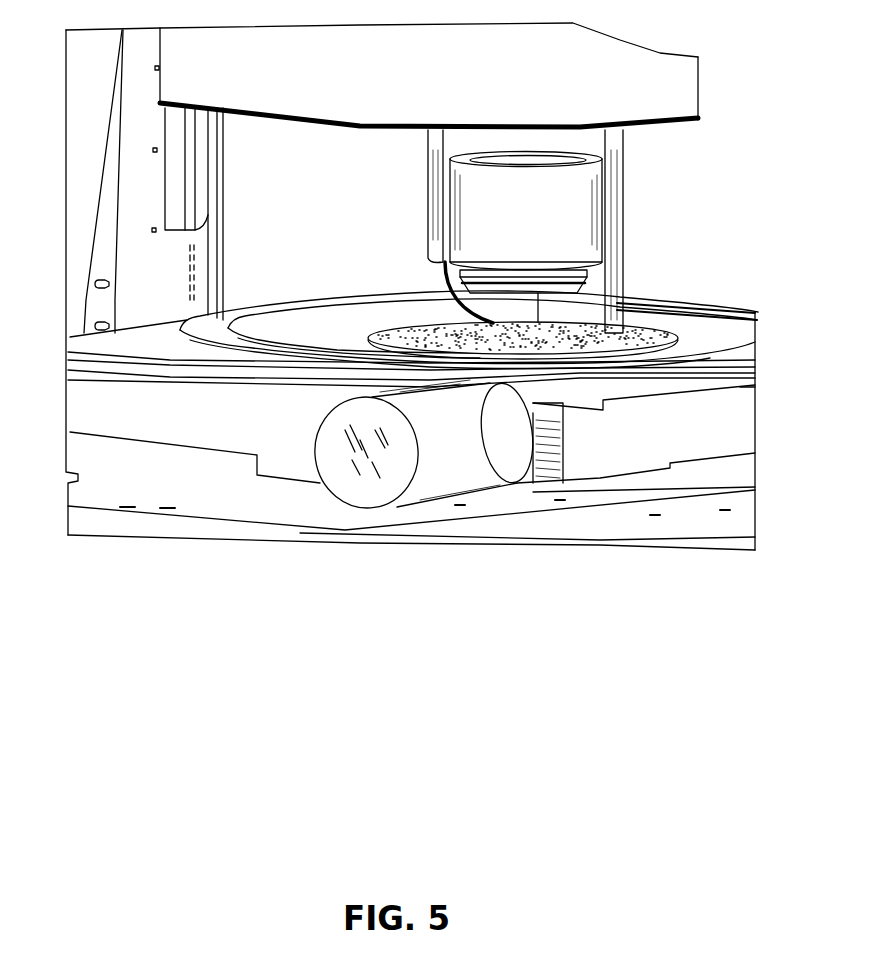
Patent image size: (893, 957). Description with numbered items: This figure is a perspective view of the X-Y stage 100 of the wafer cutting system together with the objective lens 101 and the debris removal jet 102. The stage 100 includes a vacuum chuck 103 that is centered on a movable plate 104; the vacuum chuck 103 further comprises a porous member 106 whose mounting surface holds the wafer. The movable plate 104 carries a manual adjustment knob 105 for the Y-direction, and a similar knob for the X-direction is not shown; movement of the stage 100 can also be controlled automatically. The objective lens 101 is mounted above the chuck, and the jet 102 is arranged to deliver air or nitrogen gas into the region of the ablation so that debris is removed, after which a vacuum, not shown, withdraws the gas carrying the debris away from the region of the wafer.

The stage 100 is at (412, 286).
The objective lens 101 is at (593, 215).
The debris removal jet 102 is at (452, 284).
The vacuum chuck 103 is at (680, 320).
The movable plate 104 is at (725, 433).
The manual adjustment knob 105 is at (327, 463).
The porous member 106 is at (680, 342).